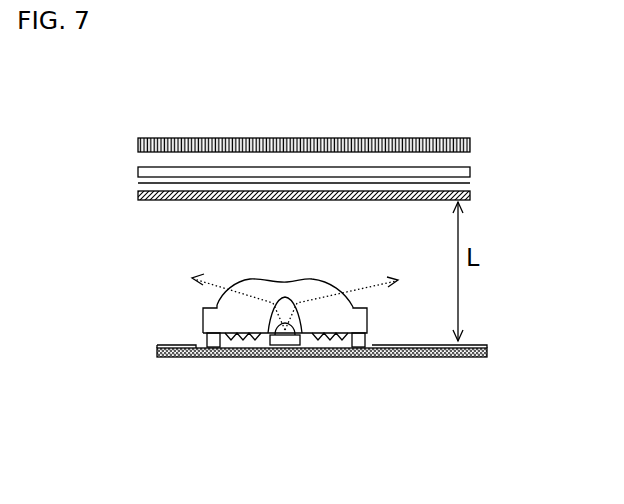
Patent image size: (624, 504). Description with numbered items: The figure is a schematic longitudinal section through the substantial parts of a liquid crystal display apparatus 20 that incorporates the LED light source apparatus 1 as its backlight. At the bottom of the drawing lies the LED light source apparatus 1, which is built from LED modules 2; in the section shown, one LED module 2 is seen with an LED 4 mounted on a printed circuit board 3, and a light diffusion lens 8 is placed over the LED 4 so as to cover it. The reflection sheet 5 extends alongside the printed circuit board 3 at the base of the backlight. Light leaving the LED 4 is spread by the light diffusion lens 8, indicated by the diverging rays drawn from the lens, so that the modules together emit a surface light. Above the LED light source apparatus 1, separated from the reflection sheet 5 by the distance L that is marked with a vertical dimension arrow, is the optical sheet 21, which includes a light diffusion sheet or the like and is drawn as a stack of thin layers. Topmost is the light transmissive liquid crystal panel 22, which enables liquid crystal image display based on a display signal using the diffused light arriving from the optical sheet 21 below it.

The LED light source apparatus 1 is at (297, 359).
The LED module 2 is at (234, 318).
The printed circuit board 3 is at (400, 358).
The LED 4 is at (279, 344).
The reflection sheet 5 is at (477, 344).
The light diffusion lens 8 is at (217, 304).
The liquid crystal display apparatus 20 is at (361, 130).
The optical sheet 21 is at (503, 165).
The liquid crystal panel 22 is at (495, 147).